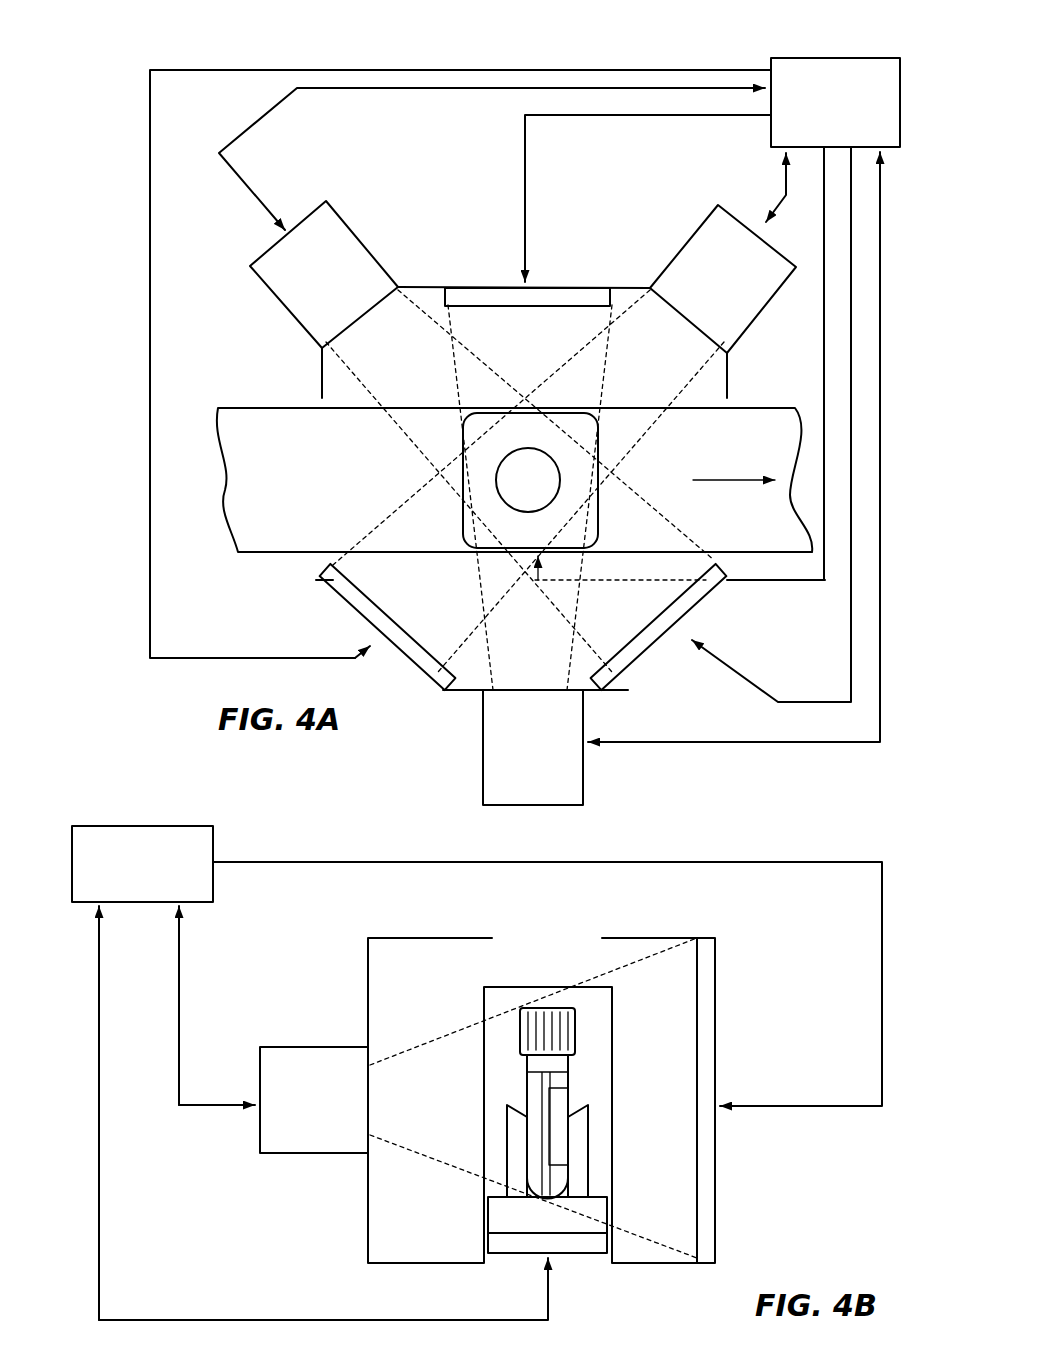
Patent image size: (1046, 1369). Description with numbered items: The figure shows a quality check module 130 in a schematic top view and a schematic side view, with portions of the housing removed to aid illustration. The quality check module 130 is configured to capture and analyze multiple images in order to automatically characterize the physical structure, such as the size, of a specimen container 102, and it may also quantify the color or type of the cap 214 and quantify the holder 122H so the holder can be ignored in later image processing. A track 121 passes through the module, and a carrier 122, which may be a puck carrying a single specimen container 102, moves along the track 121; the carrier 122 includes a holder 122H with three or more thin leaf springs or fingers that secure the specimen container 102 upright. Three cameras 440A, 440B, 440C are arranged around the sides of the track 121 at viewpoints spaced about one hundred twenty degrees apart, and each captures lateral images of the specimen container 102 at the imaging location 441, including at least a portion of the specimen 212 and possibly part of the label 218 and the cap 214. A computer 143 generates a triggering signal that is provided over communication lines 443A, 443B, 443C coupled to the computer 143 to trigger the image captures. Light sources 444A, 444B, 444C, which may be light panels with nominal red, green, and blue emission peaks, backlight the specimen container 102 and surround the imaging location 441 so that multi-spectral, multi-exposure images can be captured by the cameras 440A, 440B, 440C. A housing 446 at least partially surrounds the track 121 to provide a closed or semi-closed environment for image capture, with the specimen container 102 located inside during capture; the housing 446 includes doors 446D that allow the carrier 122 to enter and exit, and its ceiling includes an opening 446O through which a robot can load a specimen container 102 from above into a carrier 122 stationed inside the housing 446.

In FIG. 4A, the quality check module 130 is at (362, 40).
In FIG. 4B, the quality check module 130 is at (160, 770).
In FIG. 4A, the computer 143 is at (832, 58).
In FIG. 4B, the computer 143 is at (137, 826).
In FIG. 4A, the communication line 443A is at (880, 280).
In FIG. 4B, the communication line 443A is at (490, 1091).
In FIG. 4A, the communication line 443B is at (417, 88).
In FIG. 4A, the communication line 443C is at (786, 190).
In FIG. 4A, the camera 440A is at (483, 750).
In FIG. 4B, the camera 440A is at (305, 1045).
In FIG. 4A, the camera 440B is at (292, 312).
In FIG. 4A, the camera 440C is at (763, 313).
In FIG. 4A, the housing 446 is at (420, 288).
In FIG. 4B, the housing 446 is at (368, 978).
In FIG. 4A, the door 446D is at (318, 398).
In FIG. 4B, the door 446D is at (483, 1015).
In FIG. 4B, the opening 446O is at (548, 932).
In FIG. 4A, the light source 444A is at (567, 288).
In FIG. 4B, the light source 444A is at (715, 1030).
In FIG. 4A, the light source 444B is at (690, 622).
In FIG. 4A, the light source 444C is at (365, 636).
In FIG. 4A, the imaging location 441 is at (548, 436).
In FIG. 4A, the track 121 is at (514, 480).
In FIG. 4B, the track 121 is at (520, 1254).
In FIG. 4A, the carrier 122 is at (467, 450).
In FIG. 4B, the carrier 122 is at (596, 1158).
In FIG. 4B, the holder 122H is at (590, 1125).
In FIG. 4A, the specimen container 102 is at (490, 474).
In FIG. 4B, the specimen container 102 is at (516, 1004).
In FIG. 4B, the specimen 212 is at (523, 1088).
In FIG. 4B, the cap 214 is at (550, 1008).
In FIG. 4B, the label 218 is at (572, 1102).